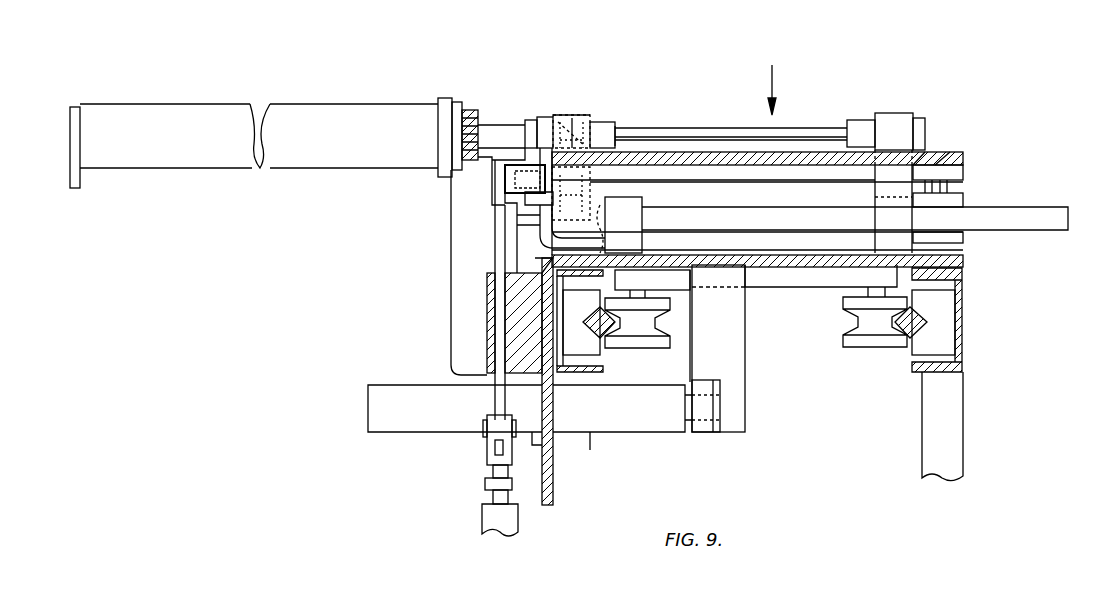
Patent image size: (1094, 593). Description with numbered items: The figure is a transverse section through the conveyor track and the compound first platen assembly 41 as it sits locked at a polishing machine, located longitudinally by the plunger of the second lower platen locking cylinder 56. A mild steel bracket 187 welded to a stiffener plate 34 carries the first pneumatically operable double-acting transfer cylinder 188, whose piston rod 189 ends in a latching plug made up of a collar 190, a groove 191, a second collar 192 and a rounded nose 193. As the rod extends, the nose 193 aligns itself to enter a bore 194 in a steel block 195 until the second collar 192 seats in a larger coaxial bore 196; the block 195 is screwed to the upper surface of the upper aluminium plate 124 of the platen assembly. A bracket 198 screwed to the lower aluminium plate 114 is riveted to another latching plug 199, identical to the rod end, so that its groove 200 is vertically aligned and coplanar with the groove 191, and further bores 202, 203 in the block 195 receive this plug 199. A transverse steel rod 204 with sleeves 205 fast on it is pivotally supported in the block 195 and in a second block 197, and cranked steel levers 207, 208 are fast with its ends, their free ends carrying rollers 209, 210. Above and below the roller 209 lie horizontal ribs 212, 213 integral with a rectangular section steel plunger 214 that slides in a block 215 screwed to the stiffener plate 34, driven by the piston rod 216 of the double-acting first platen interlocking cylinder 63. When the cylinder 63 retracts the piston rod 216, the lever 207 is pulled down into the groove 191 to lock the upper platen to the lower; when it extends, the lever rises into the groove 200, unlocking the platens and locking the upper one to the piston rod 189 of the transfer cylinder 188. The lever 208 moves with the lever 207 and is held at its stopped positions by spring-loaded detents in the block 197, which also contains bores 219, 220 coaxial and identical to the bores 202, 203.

The first transfer cylinder 188 is at (356, 114).
The rib 213 is at (472, 130).
The piston rod 189 is at (510, 131).
The collar 190 is at (528, 119).
The groove 191 is at (546, 116).
The second collar 192 is at (570, 113).
The steel block 195 is at (573, 118).
The larger bore 196 is at (558, 117).
The bore 194 is at (593, 120).
The rounded nose 193 is at (616, 118).
The steel rod 204 is at (798, 132).
The sleeves 205 is at (616, 134).
The first platen assembly 41 is at (772, 79).
The block 197 is at (888, 120).
The cranked steel lever 208 is at (922, 122).
The bore 220 is at (926, 143).
The bore 219 is at (930, 160).
The upper aluminium plate 124 is at (957, 159).
The roller 210 is at (957, 176).
The lower aluminium plate 114 is at (965, 258).
The bore 203 is at (562, 185).
The bore 202 is at (560, 173).
The cranked steel lever 207 is at (522, 183).
The rib 212 is at (517, 199).
The roller 209 is at (522, 199).
The groove 200 is at (538, 206).
The latching plug 199 is at (540, 212).
The bracket 198 is at (545, 247).
The bracket 187 is at (458, 288).
The plunger 214 is at (498, 308).
The block 215 is at (528, 337).
The second lower platen locking cylinder 56 is at (398, 420).
The piston rod 216 is at (484, 486).
The first platen interlocking cylinder 63 is at (482, 518).
The stiffener plate 34 is at (548, 505).